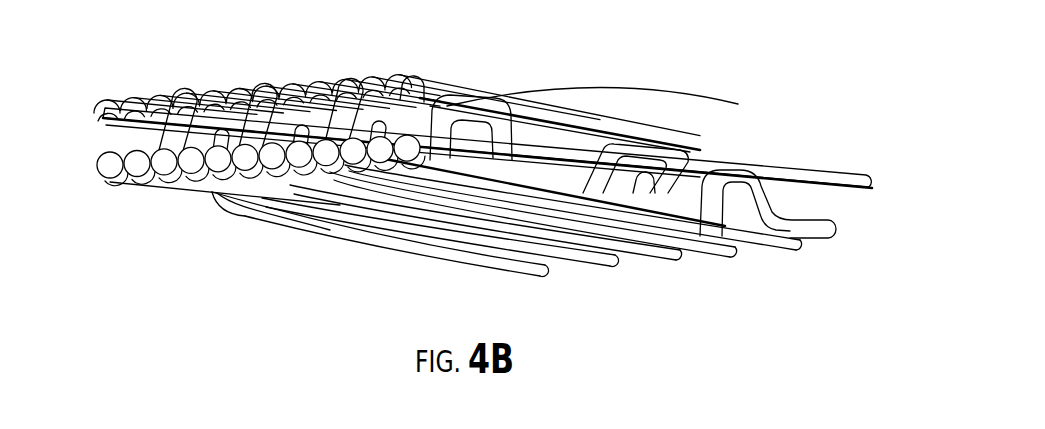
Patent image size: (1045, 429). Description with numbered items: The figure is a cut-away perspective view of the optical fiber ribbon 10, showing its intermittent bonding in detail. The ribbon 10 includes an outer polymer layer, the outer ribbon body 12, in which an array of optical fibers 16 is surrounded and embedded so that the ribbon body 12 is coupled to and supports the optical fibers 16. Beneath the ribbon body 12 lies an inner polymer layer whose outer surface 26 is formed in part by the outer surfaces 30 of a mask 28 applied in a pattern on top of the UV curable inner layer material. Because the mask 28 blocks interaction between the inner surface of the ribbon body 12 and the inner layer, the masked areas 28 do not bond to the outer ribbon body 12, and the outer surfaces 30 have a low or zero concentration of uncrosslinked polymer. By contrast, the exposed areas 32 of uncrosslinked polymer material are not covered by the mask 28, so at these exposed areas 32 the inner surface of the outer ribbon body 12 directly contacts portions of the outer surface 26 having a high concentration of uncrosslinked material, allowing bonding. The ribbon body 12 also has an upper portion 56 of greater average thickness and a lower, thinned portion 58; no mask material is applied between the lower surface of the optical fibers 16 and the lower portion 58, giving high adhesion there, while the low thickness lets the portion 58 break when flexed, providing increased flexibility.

The optical fiber ribbon 10 is at (860, 74).
The outer ribbon body 12 is at (850, 175).
The optical fibers 16 is at (212, 188).
The outer surface 26 is at (700, 154).
The mask 28 is at (580, 182).
The outer surfaces of mask 30 is at (826, 231).
The exposed areas 32 is at (457, 112).
The upper portion 56 is at (107, 98).
The lower portion 58 is at (340, 186).